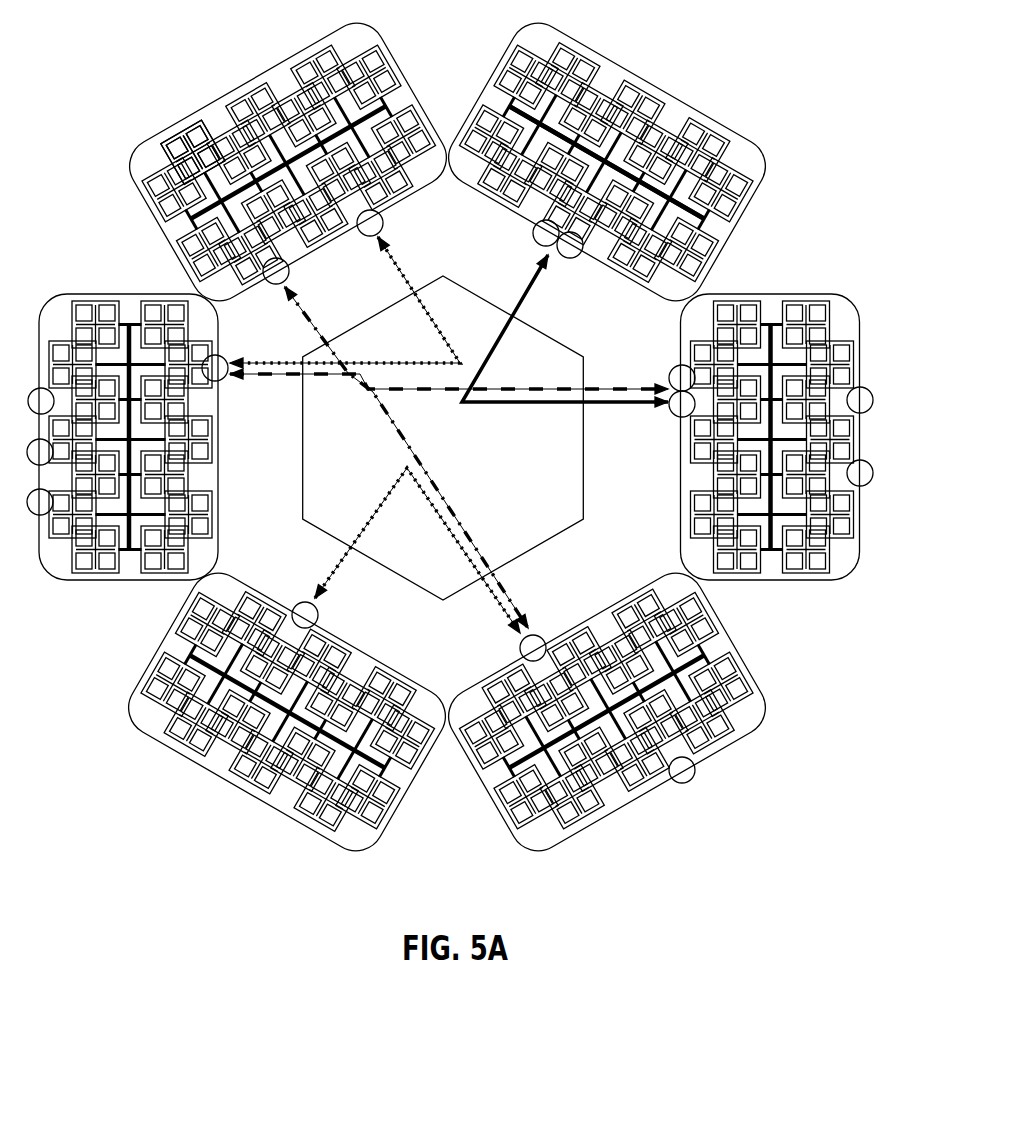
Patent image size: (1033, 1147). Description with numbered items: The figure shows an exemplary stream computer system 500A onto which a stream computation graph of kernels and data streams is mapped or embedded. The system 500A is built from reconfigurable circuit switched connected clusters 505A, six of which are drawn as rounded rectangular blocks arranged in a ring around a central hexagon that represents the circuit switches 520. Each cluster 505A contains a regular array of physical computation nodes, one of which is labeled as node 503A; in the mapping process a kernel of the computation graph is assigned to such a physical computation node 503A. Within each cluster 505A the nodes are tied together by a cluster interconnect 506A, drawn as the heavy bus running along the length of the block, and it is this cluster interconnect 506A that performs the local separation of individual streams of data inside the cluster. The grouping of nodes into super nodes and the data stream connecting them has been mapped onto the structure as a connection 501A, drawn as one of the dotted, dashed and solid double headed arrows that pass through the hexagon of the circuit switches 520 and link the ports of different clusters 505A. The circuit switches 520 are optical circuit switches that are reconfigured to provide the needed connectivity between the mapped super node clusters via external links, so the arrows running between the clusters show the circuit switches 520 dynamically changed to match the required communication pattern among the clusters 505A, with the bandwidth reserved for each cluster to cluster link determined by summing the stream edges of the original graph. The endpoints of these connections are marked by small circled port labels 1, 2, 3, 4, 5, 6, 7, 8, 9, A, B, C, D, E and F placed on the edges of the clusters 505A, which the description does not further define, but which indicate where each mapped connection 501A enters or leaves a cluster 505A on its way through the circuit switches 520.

The stream computer system 500A is at (812, 76).
The connection 501A is at (404, 256).
The physical computation node 503A is at (175, 140).
The cluster 505A is at (593, 48).
The cluster interconnect 506A is at (712, 221).
The circuit switch 520 is at (575, 491).
The port 1 is at (370, 223).
The port 2 is at (276, 271).
The port 3 is at (215, 368).
The port 4 is at (682, 378).
The port 5 is at (682, 404).
The port 6 is at (533, 648).
The port 7 is at (41, 401).
The port 8 is at (860, 400).
The port 9 is at (860, 473).
The port A is at (570, 245).
The port B is at (546, 233).
The port C is at (305, 615).
The port D is at (682, 770).
The port E is at (40, 452).
The port F is at (40, 502).